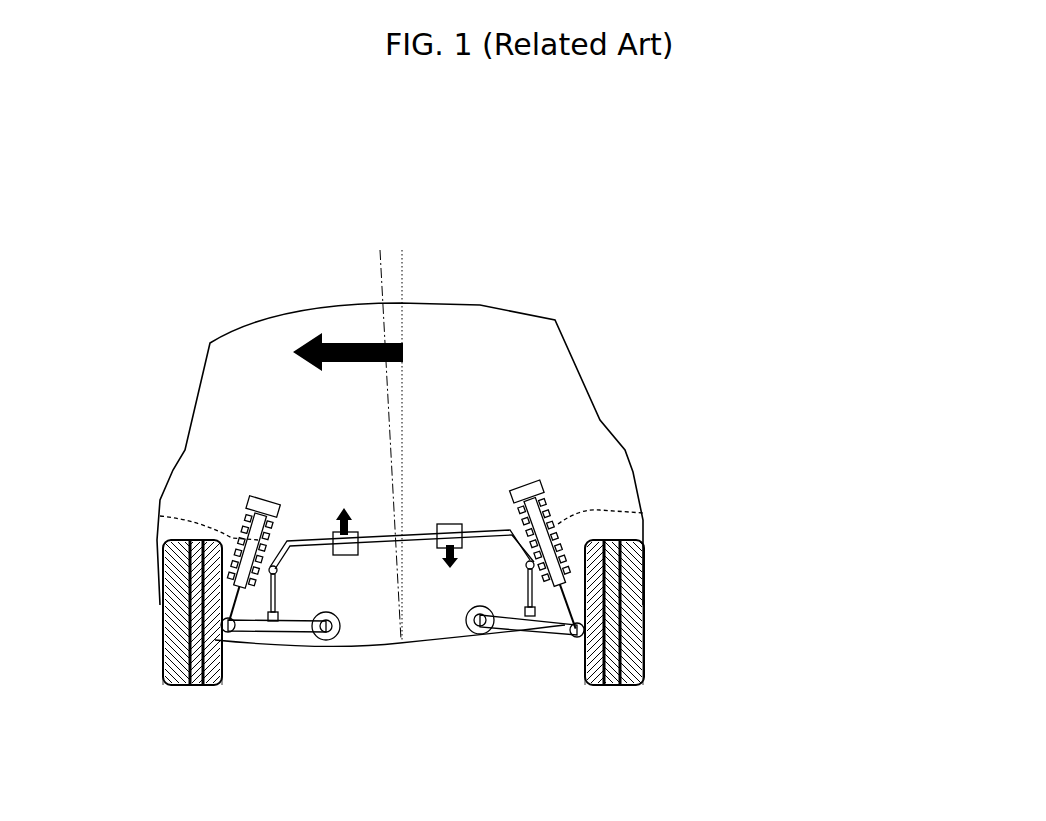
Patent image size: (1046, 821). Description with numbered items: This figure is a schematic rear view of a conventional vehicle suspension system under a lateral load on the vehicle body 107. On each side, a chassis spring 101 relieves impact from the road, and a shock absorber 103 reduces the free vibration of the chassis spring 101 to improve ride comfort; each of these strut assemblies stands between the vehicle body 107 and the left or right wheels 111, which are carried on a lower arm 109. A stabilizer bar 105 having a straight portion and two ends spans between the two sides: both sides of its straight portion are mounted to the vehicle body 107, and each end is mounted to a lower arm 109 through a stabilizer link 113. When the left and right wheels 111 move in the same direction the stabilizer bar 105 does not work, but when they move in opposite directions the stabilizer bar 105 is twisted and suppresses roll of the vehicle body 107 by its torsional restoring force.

The chassis spring 101 is at (245, 545).
The shock absorber 103 is at (182, 582).
The stabilizer bar 105 is at (425, 540).
The vehicle body 107 is at (580, 370).
The lower arm 109 is at (260, 632).
The wheels 111 is at (190, 690).
The stabilizer link 113 is at (305, 642).